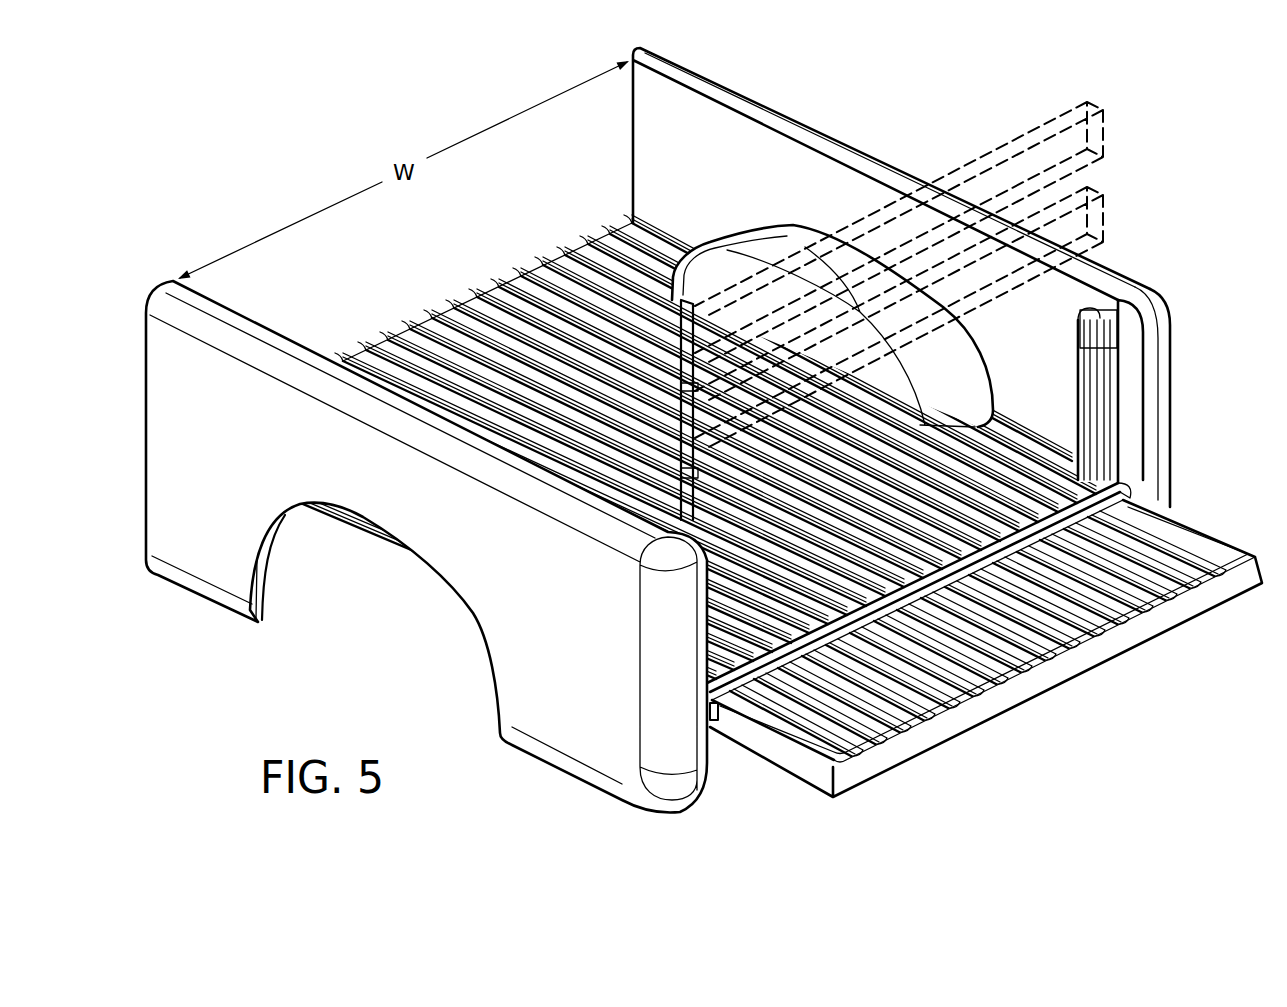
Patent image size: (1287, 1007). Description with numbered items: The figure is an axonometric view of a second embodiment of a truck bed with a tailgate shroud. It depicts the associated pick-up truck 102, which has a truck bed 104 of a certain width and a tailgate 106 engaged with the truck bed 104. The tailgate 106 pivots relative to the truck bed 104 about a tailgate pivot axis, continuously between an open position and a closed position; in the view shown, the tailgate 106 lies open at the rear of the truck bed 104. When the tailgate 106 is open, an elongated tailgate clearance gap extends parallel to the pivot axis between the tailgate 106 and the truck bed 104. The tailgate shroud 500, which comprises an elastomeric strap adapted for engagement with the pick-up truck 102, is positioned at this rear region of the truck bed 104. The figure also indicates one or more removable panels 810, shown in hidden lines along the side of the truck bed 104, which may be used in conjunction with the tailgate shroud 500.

The pick-up truck 102 is at (507, 595).
The truck bed 104 is at (1035, 435).
The tailgate 106 is at (893, 757).
The tailgate shroud 500 is at (1132, 478).
The removable panels 810 is at (1107, 210).